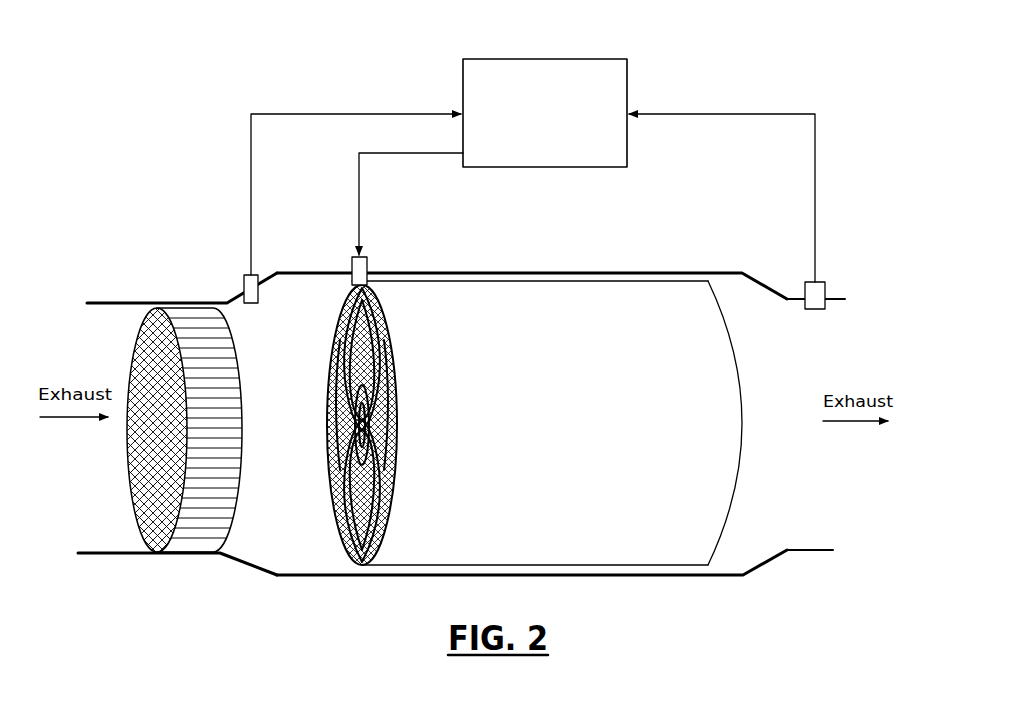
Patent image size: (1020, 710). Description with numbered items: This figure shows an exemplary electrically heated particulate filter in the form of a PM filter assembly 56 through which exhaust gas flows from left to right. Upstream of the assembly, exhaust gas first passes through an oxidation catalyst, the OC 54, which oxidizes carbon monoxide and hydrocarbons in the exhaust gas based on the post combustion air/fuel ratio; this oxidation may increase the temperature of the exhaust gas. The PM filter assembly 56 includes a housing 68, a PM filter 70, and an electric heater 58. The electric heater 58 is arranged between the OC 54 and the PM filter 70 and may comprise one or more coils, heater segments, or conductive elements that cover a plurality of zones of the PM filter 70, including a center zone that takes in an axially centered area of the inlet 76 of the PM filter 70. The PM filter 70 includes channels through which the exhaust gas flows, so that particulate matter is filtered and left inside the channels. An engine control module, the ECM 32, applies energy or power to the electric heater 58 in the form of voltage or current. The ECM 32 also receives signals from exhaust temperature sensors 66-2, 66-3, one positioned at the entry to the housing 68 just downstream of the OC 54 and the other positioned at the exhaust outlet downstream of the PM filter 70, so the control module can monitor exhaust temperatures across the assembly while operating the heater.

The engine control module 32 is at (546, 59).
The oxidation catalyst 54 is at (170, 305).
The PM filter assembly 56 is at (162, 199).
The electric heater 58 is at (359, 425).
The exhaust temperature sensor 66-2 is at (246, 275).
The exhaust temperature sensor 66-3 is at (822, 282).
The housing 68 is at (569, 272).
The PM filter 70 is at (742, 422).
The inlet 76 is at (397, 422).